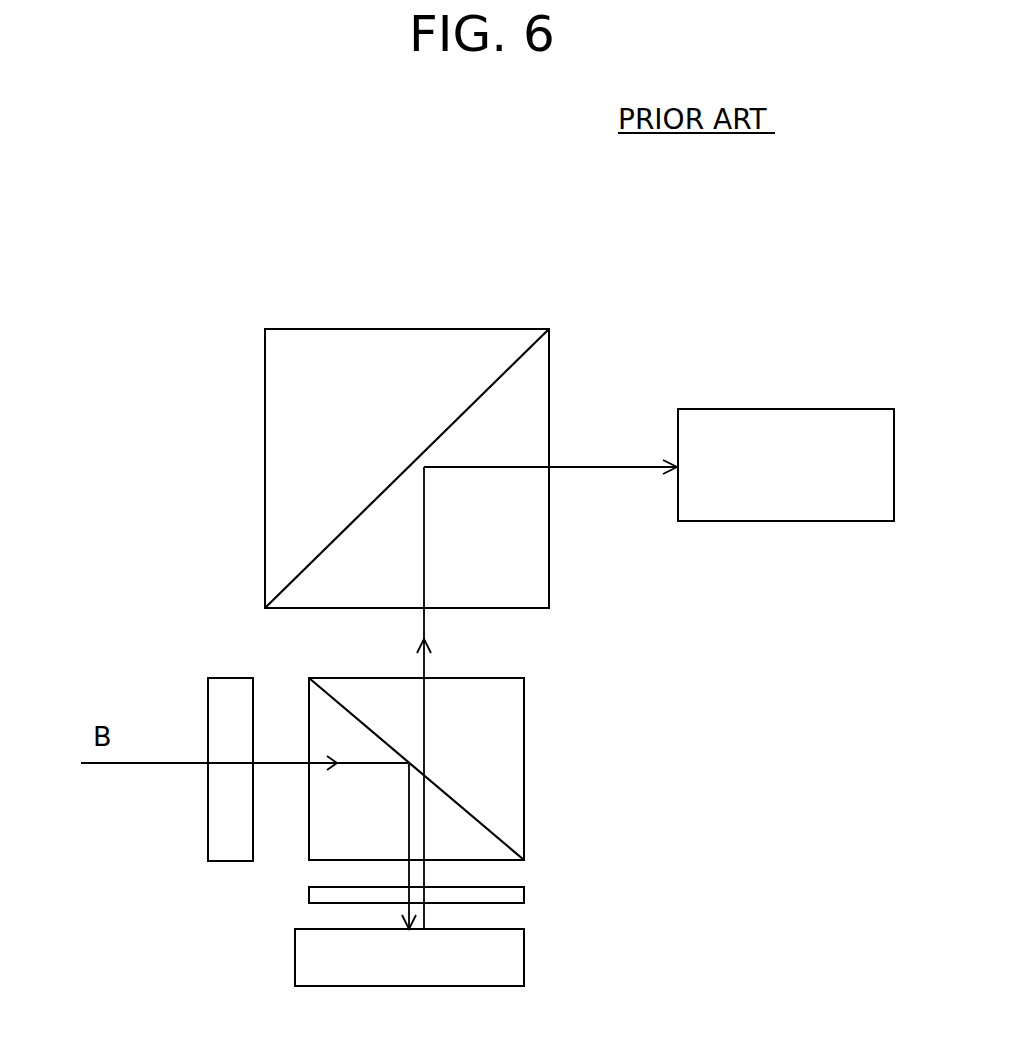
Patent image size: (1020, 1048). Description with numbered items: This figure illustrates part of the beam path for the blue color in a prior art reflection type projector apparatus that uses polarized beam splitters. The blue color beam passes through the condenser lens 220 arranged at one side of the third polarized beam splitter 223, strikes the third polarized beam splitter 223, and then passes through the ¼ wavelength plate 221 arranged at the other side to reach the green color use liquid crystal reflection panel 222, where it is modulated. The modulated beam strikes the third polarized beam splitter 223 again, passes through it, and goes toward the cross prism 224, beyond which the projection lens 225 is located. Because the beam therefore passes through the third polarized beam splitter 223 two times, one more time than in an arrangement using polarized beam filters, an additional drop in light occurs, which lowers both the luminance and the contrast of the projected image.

The condenser lens 220 is at (228, 862).
The ¼ wavelength plate 221 is at (523, 890).
The green color use liquid crystal reflection panel 222 is at (523, 950).
The third polarized beam splitter 223 is at (523, 820).
The cross prism 224 is at (505, 327).
The projection lens 225 is at (859, 407).